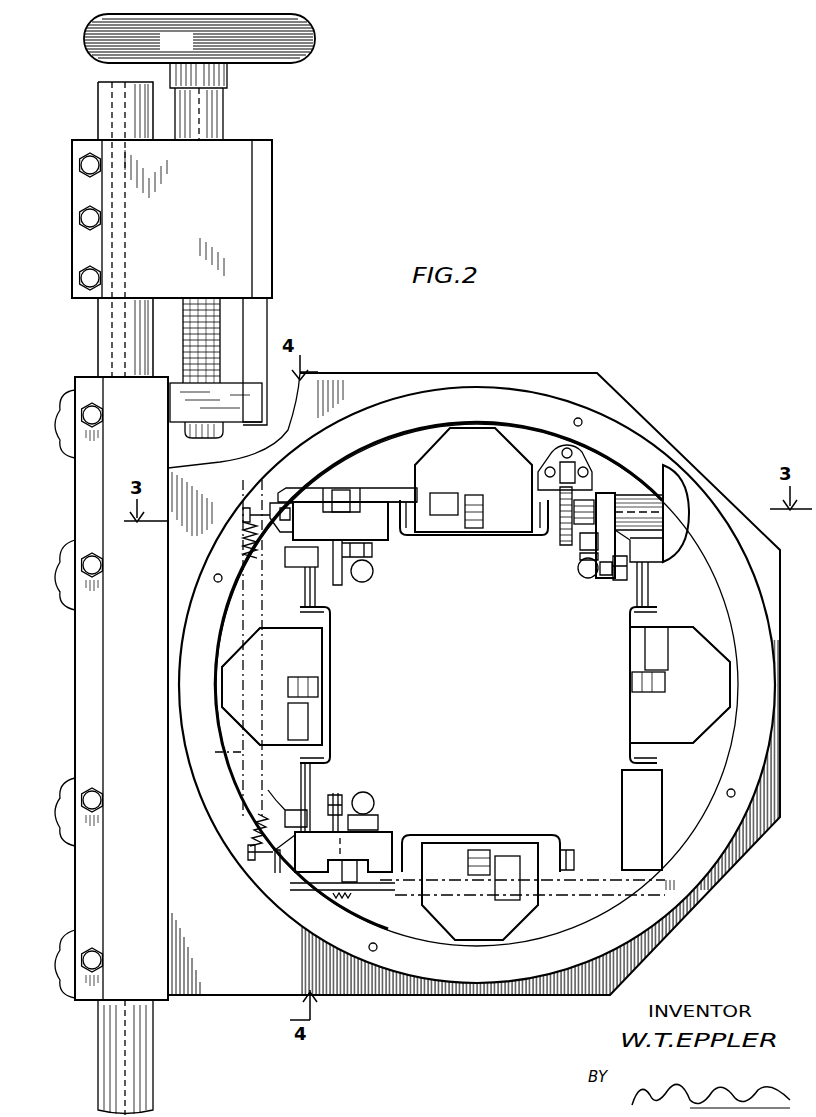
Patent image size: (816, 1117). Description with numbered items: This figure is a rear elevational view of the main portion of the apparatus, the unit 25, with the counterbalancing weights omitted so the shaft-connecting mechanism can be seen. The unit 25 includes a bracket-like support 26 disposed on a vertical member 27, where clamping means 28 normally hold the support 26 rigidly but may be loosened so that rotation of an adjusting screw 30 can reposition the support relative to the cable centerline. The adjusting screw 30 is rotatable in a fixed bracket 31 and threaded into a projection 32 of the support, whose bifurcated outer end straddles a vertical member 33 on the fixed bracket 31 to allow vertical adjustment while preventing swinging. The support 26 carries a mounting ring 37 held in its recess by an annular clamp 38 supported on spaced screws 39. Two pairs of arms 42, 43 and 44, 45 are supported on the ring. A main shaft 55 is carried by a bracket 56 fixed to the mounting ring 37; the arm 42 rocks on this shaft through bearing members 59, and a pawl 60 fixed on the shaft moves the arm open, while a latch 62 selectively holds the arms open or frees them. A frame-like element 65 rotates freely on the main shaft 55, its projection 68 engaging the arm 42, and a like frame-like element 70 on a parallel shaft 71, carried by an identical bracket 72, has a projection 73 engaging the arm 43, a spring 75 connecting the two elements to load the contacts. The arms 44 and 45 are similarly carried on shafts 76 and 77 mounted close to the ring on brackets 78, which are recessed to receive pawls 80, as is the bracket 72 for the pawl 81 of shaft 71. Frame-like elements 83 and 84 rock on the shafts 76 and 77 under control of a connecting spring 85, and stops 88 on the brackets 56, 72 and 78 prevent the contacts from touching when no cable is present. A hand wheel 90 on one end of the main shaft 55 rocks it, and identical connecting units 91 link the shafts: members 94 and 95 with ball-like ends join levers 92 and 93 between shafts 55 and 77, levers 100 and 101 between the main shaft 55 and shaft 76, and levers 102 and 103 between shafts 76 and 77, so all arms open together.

The unit 25 is at (538, 332).
The bracket-like support 26 is at (620, 408).
The vertical member 27 is at (154, 1090).
The clamping means 28 is at (62, 450).
The adjusting screw 30 is at (222, 116).
The fixed bracket 31 is at (238, 205).
The projection 32 is at (230, 412).
The vertical member 33 is at (268, 318).
The mounting ring 37 is at (608, 868).
The annular retaining element or clamp 38 is at (470, 980).
The screws 39 is at (578, 418).
The arm 42 is at (510, 537).
The arm 43 is at (452, 836).
The arm 44 is at (328, 648).
The arm 45 is at (630, 640).
The main shaft 55 is at (592, 510).
The bracket 56 is at (468, 440).
The bearing members 59 is at (412, 522).
The pawl 60 is at (470, 532).
The latch 62 is at (545, 480).
The frame-like element 65 is at (378, 505).
The projection 68 is at (408, 497).
The frame-like element 70 is at (398, 826).
The shaft 71 is at (570, 856).
The bracket 72 is at (488, 938).
The projection 73 is at (388, 878).
The spring 75 is at (228, 650).
The shaft 76 is at (316, 592).
The shaft 77 is at (636, 600).
The supporting brackets 78 is at (232, 670).
The pawls 80 is at (316, 690).
The pawl 81 is at (483, 850).
The frame-like element 83 is at (326, 778).
The frame-like element 84 is at (618, 766).
The connecting spring 85 is at (584, 890).
The stops 88 is at (446, 502).
The hand wheel 90 is at (676, 500).
The connecting units 91 is at (377, 584).
The lever 92 is at (608, 505).
The lever 93 is at (652, 560).
The member 94 is at (606, 578).
The member 95 is at (578, 562).
The lever 100 is at (335, 510).
The lever 101 is at (290, 560).
The lever 102 is at (288, 812).
The lever 103 is at (345, 792).